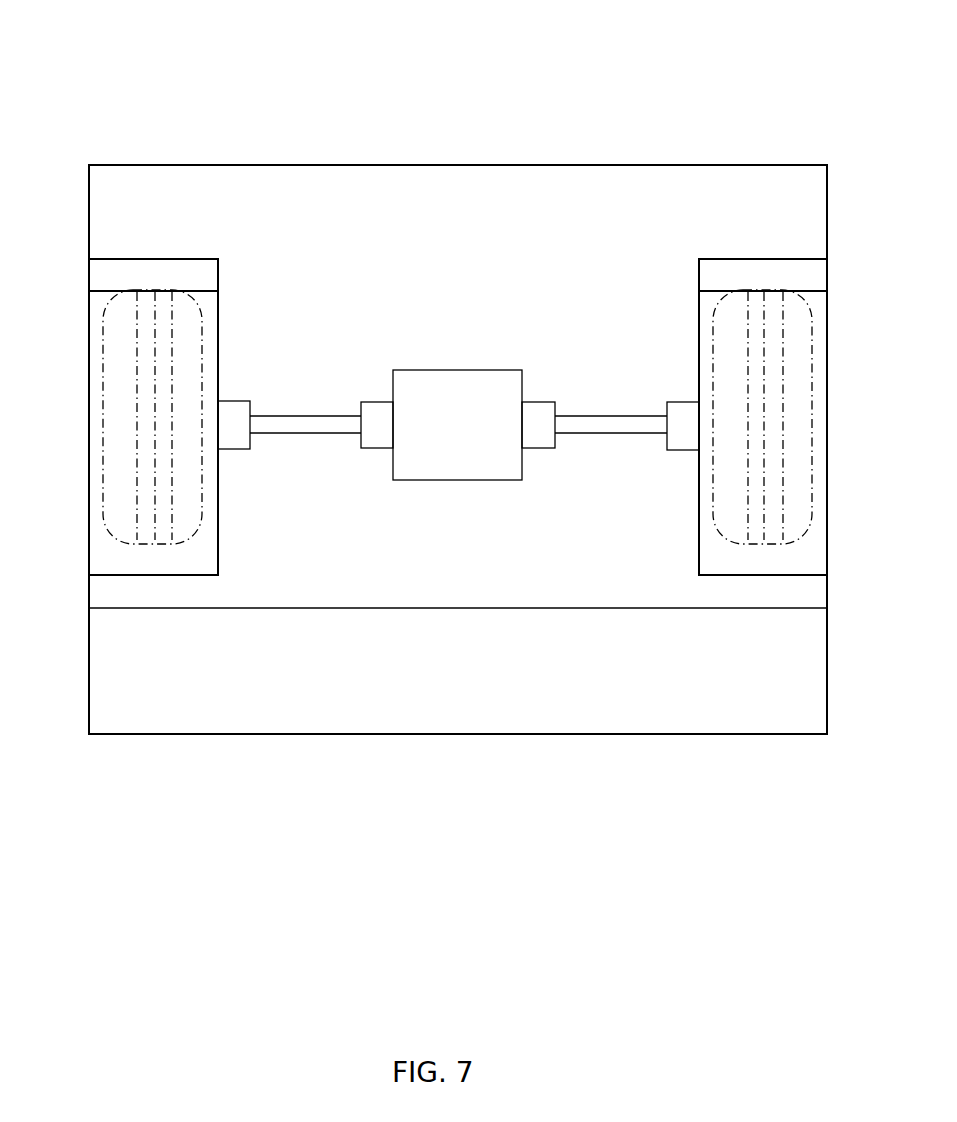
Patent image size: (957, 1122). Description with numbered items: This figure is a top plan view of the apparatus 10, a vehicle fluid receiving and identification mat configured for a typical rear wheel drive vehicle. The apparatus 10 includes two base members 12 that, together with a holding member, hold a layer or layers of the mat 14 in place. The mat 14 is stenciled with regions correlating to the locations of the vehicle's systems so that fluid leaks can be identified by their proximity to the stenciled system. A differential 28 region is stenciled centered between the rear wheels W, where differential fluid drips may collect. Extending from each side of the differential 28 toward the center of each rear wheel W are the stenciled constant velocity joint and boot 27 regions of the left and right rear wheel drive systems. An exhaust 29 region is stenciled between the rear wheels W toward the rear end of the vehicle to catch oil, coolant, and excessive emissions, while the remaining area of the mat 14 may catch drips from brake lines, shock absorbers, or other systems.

The apparatus 10 is at (573, 117).
The mat 14 is at (201, 165).
The base members 12 is at (88, 315).
The rear wheels W is at (103, 473).
The constant velocity (CV) joint and boot 27 is at (378, 398).
The differential 28 is at (442, 385).
The exhaust 29 is at (602, 686).